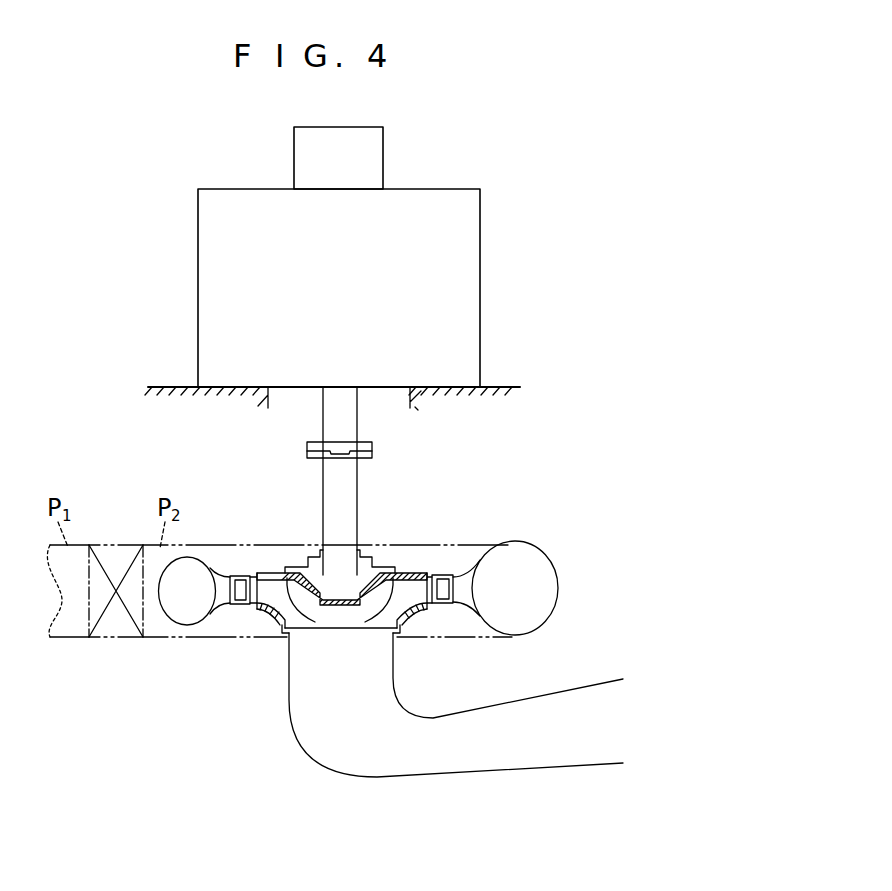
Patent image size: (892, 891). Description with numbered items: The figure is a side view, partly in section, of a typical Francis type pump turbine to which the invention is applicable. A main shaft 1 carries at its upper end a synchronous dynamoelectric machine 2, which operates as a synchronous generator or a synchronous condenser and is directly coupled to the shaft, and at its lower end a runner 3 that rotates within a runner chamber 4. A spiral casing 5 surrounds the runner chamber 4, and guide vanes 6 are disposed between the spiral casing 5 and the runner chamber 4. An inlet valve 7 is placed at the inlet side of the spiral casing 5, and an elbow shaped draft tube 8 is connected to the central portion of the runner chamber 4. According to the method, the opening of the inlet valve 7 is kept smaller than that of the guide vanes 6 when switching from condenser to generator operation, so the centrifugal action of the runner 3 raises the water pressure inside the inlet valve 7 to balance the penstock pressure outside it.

The main shaft 1 is at (350, 487).
The synchronous dynamoelectric machine 2 is at (480, 251).
The runner 3 is at (367, 591).
The runner chamber 4 is at (272, 611).
The spiral casing 5 is at (537, 555).
The guide vanes 6 is at (442, 576).
The inlet valve 7 is at (107, 623).
The draft tube 8 is at (310, 726).